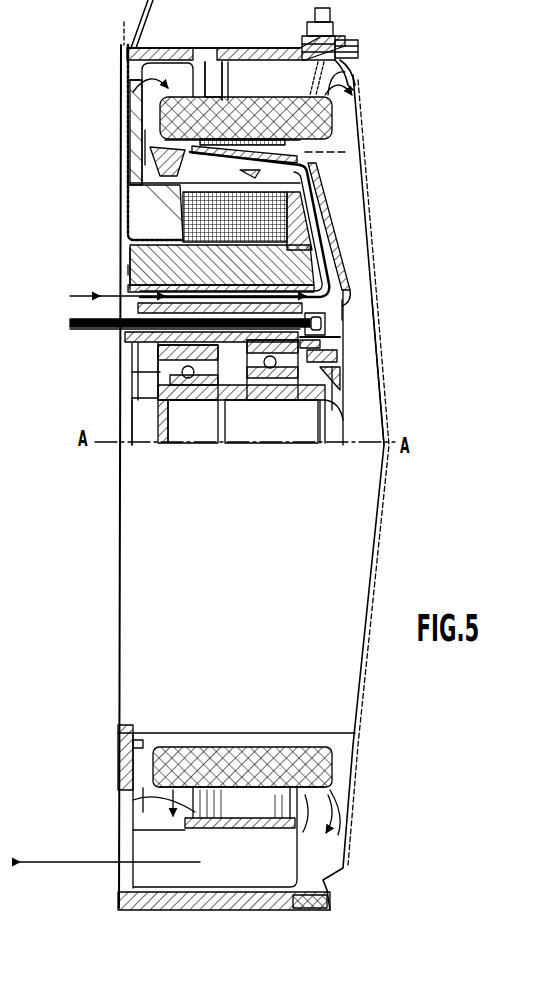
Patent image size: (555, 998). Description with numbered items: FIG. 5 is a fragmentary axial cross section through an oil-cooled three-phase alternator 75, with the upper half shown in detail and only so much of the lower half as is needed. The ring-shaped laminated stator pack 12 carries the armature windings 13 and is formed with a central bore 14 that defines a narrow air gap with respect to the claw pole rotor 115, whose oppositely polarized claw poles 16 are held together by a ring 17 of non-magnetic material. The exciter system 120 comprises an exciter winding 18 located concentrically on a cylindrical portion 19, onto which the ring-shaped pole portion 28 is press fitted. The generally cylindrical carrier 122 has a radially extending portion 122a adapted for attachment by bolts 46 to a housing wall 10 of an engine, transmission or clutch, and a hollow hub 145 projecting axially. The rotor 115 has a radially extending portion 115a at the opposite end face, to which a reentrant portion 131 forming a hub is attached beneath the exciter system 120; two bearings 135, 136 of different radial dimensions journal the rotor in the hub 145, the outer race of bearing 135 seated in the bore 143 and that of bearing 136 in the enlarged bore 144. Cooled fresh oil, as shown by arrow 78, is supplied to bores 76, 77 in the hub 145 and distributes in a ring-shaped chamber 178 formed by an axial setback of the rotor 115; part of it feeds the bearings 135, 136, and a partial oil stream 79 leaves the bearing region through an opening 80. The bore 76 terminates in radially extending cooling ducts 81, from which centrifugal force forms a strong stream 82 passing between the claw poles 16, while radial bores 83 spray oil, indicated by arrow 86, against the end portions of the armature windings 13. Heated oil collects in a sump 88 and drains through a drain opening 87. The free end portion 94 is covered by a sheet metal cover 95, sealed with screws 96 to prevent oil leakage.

The housing wall 10 is at (83, 499).
The stator pack 12 is at (206, 60).
The armature windings 13 is at (330, 135).
The central bore 14 is at (221, 78).
The claw poles 16 is at (306, 172).
The ring 17 is at (247, 184).
The exciter winding 18 is at (272, 245).
The cylindrical portion 19 is at (130, 254).
The pole portion 28 is at (340, 258).
The bolts 46 is at (88, 332).
The alternator 75 is at (362, 508).
The bore 76 is at (130, 294).
The bore 77 is at (131, 388).
The arrow 78 is at (65, 300).
The partial oil stream 79 is at (348, 330).
The opening 80 is at (340, 338).
The cooling ducts 81 is at (322, 207).
The strong stream 82 is at (140, 152).
The radial bores 83 is at (366, 150).
The arrow 86 is at (133, 90).
The drain opening 87 is at (128, 870).
The sump 88 is at (224, 873).
The free end portion 94 is at (332, 40).
The sheet metal cover 95 is at (381, 400).
The screws 96 is at (355, 48).
The rotor 115 is at (346, 192).
The radially extending portion 115a is at (350, 288).
The exciter system 120 is at (240, 272).
The carrier 122 is at (127, 162).
The radially extending portion 122a is at (125, 265).
The reentrant portion 131 is at (340, 400).
The bearing 135 is at (184, 394).
The bearing 136 is at (268, 396).
The bore 143 is at (232, 394).
The enlarged bore 144 is at (336, 381).
The hollow hub 145 is at (145, 342).
The ring-shaped chamber 178 is at (148, 357).